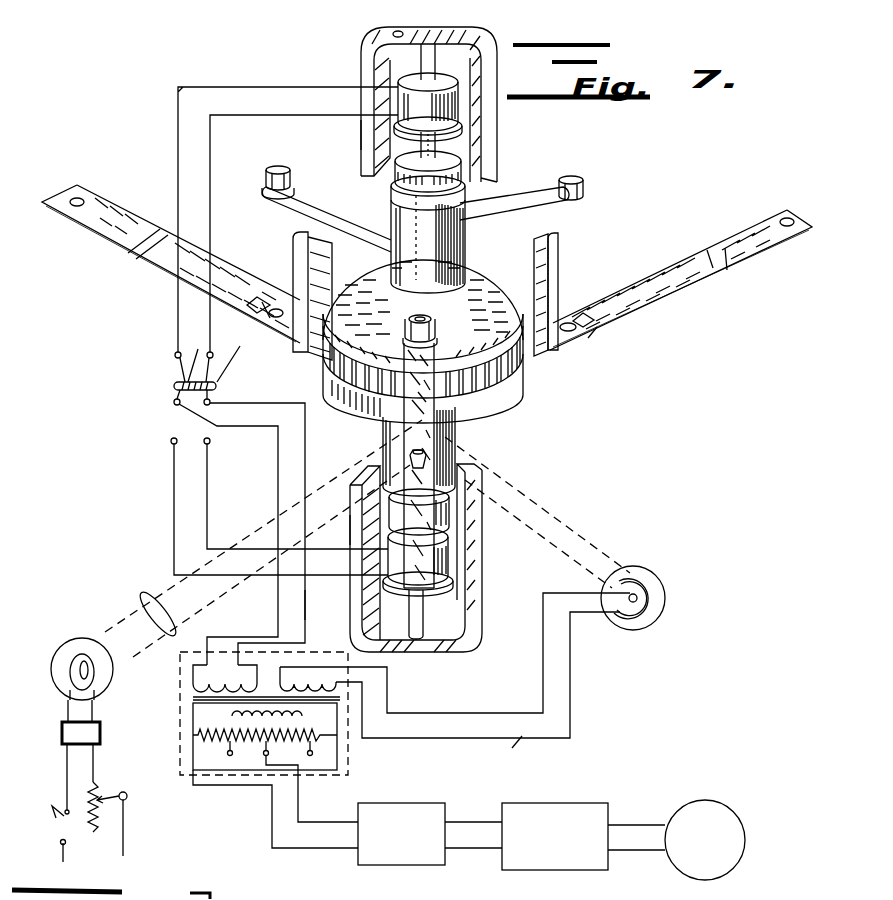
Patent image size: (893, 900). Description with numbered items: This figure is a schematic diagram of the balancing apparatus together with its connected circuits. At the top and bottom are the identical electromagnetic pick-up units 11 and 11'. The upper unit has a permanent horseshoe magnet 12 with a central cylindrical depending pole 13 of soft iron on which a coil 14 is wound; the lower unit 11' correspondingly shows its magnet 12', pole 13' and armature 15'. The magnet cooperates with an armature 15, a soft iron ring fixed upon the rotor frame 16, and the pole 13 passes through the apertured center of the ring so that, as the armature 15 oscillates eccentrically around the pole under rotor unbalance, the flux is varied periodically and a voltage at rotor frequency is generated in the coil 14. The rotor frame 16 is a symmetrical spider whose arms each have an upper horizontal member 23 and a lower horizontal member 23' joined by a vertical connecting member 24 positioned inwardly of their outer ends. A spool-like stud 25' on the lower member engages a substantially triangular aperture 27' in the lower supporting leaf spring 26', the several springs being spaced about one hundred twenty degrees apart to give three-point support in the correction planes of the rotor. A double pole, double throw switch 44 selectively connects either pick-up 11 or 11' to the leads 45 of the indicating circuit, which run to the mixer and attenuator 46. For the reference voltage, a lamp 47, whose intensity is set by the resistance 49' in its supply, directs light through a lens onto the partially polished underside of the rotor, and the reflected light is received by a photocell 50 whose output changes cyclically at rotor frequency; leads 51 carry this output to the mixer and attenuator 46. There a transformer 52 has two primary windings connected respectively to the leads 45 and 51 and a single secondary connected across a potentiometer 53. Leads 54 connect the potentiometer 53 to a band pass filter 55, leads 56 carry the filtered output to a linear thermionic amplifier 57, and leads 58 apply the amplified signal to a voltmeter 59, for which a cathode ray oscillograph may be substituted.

The electromagnetic pick-up unit 11 is at (407, 104).
The lower electromagnetic pick-up unit 11' is at (438, 558).
The permanent horseshoe magnet 12 is at (342, 139).
The lower bracket leg 12' is at (336, 530).
The central cylindrical depending pole 13 is at (473, 149).
The lower shaft 13' is at (432, 614).
The coil 14 is at (456, 108).
The armature 15 is at (444, 222).
The lower disc 15' is at (452, 512).
The rotor frame 16 is at (420, 436).
The upper horizontal member 23 is at (422, 209).
The lower horizontal member 23' is at (424, 378).
The vertical connecting member 24 is at (293, 240).
The spool-like stud 25' is at (432, 294).
The lower supporting leaf spring 26' is at (427, 267).
The triangular aperture 27' is at (435, 385).
The double pole, double throw switch 44 is at (174, 386).
The leads 45 is at (298, 610).
The mixer and attenuator 46 is at (321, 653).
The lamp 47 is at (69, 640).
The resistance 49' is at (118, 811).
The photocell 50 is at (665, 605).
The leads 51 is at (455, 665).
The transformer 52 is at (266, 678).
The potentiometer 53 is at (203, 732).
The leads 54 is at (270, 814).
The band pass filter 55 is at (390, 865).
The leads 56 is at (465, 849).
The linear thermionic amplifier 57 is at (557, 870).
The leads 58 is at (635, 851).
The voltmeter 59 is at (744, 822).